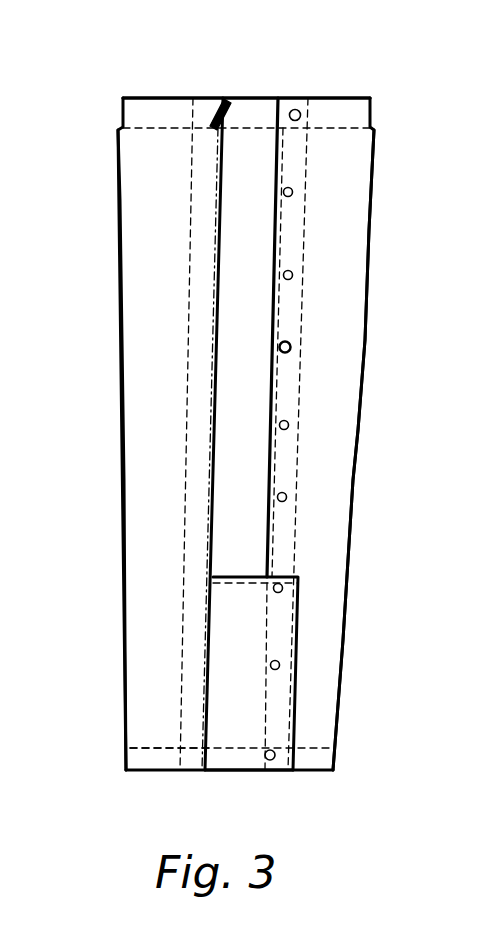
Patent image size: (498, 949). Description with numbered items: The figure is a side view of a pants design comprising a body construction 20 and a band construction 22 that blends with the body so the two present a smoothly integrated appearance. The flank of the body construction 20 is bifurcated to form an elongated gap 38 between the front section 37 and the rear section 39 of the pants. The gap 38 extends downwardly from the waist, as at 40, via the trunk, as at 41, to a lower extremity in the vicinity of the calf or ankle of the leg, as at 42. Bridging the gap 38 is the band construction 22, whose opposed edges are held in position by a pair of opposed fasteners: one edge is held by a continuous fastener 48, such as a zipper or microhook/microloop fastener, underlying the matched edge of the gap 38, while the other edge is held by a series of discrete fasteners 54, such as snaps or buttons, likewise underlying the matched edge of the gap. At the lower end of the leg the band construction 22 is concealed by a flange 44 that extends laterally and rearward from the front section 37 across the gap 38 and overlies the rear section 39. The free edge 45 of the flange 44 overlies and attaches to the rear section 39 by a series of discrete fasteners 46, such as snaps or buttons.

The body construction 20 is at (152, 303).
The band construction 22 is at (244, 423).
The front section 37 is at (147, 400).
The gap 38 is at (220, 303).
The rear section 39 is at (330, 397).
The waist 40 is at (245, 117).
The trunk 41 is at (258, 288).
The lower extremity 42 is at (232, 650).
The flange 44 is at (238, 712).
The free edge 45 is at (297, 635).
The discrete fasteners 46 is at (280, 773).
The continuous fastener 48 is at (200, 213).
The discrete fasteners 54 is at (292, 346).